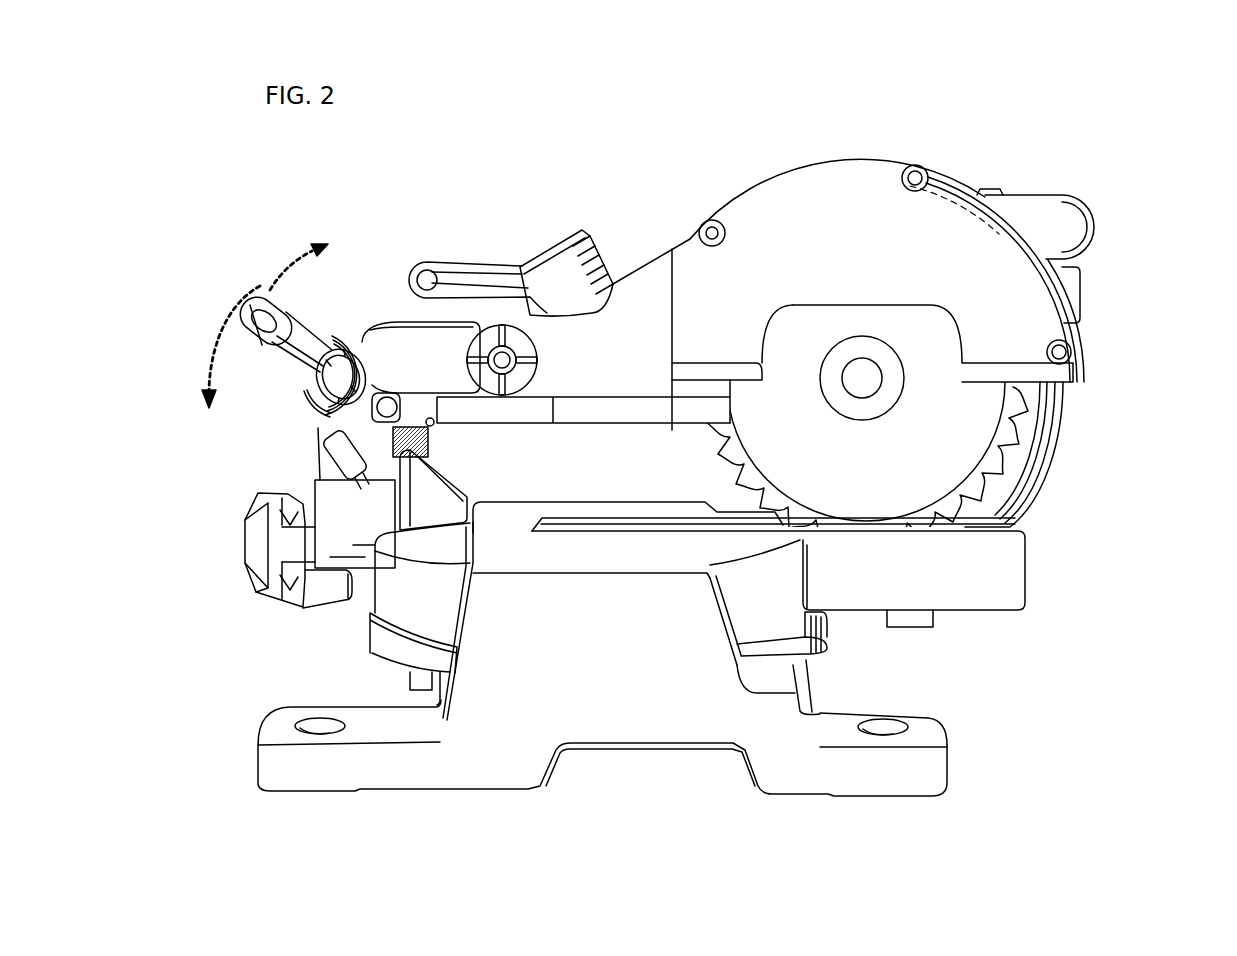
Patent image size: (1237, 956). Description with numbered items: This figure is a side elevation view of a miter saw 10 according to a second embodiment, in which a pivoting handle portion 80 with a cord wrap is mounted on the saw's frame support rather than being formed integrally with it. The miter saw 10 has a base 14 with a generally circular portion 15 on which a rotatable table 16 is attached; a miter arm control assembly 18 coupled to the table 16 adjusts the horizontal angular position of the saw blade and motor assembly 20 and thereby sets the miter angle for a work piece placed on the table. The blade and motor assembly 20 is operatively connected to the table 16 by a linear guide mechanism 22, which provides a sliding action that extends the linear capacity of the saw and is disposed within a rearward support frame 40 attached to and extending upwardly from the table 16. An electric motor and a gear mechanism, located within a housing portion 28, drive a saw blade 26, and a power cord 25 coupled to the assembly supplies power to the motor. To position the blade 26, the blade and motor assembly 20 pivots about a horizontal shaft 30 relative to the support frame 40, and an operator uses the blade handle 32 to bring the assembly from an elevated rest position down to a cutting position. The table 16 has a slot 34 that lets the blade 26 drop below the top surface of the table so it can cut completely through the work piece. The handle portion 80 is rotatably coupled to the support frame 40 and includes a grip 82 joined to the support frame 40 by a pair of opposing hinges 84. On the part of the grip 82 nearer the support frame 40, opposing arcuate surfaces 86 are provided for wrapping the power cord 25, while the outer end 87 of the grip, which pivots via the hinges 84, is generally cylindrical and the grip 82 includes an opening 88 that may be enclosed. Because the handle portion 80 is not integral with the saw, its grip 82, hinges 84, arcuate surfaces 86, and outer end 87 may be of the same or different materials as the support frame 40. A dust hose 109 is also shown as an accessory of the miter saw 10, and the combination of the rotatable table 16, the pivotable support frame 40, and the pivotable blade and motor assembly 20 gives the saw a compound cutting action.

The miter saw 10 is at (1046, 92).
The base 14 is at (850, 788).
The generally circular portion 15 is at (836, 643).
The rotatable table 16 is at (372, 603).
The miter arm control assembly 18 is at (300, 494).
The saw blade and motor assembly 20 is at (1120, 347).
The linear guide mechanism 22 is at (640, 245).
The power cord 25 is at (362, 332).
The saw blade 26 is at (1010, 446).
The housing portion 28 is at (846, 174).
The horizontal shaft 30 is at (512, 325).
The blade handle 32 is at (1073, 209).
The slot 34 is at (560, 522).
The support frame 40 is at (405, 322).
The handle portion 80 is at (280, 371).
The grip 82 is at (322, 367).
The hinges 84 is at (388, 413).
The arcuate surfaces 86 is at (338, 412).
The outer end 87 is at (252, 304).
The opening 88 is at (295, 330).
The dust hose 109 is at (573, 243).